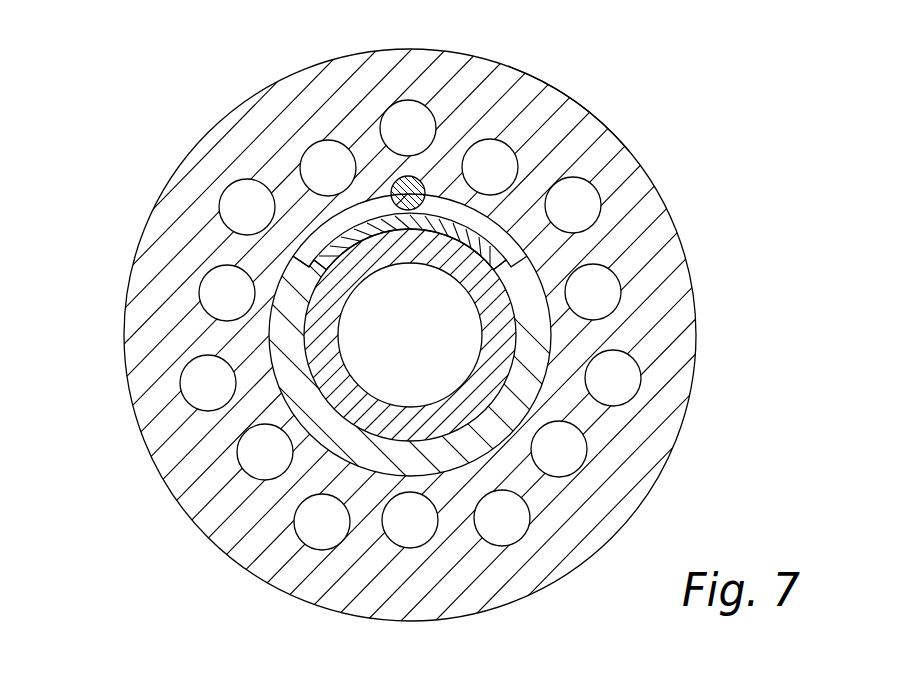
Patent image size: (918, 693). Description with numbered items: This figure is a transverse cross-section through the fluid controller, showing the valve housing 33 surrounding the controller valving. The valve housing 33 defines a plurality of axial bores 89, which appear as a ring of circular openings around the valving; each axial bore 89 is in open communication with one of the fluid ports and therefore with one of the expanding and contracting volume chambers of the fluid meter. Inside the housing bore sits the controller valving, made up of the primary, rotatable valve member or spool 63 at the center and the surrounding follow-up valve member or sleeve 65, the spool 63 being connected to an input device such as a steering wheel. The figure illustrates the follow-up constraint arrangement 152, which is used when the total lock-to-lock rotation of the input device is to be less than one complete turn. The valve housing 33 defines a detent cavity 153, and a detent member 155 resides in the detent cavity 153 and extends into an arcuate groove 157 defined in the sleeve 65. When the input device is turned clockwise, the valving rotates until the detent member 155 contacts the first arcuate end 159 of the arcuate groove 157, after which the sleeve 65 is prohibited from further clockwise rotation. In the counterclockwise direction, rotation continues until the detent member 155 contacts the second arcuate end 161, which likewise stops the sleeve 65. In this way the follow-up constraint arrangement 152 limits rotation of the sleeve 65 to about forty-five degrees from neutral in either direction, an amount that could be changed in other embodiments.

The valve housing 33 is at (681, 228).
The second arcuate end 161 is at (575, 98).
The axial bores 89 is at (308, 154).
The follow-up valve member 65 is at (290, 339).
The primary, rotatable valve member 63 is at (513, 340).
The detent member 155 is at (398, 180).
The follow-up constraint arrangement 152 is at (406, 166).
The detent cavity 153 is at (430, 178).
The arcuate groove 157 is at (360, 210).
The first arcuate end 159 is at (312, 248).